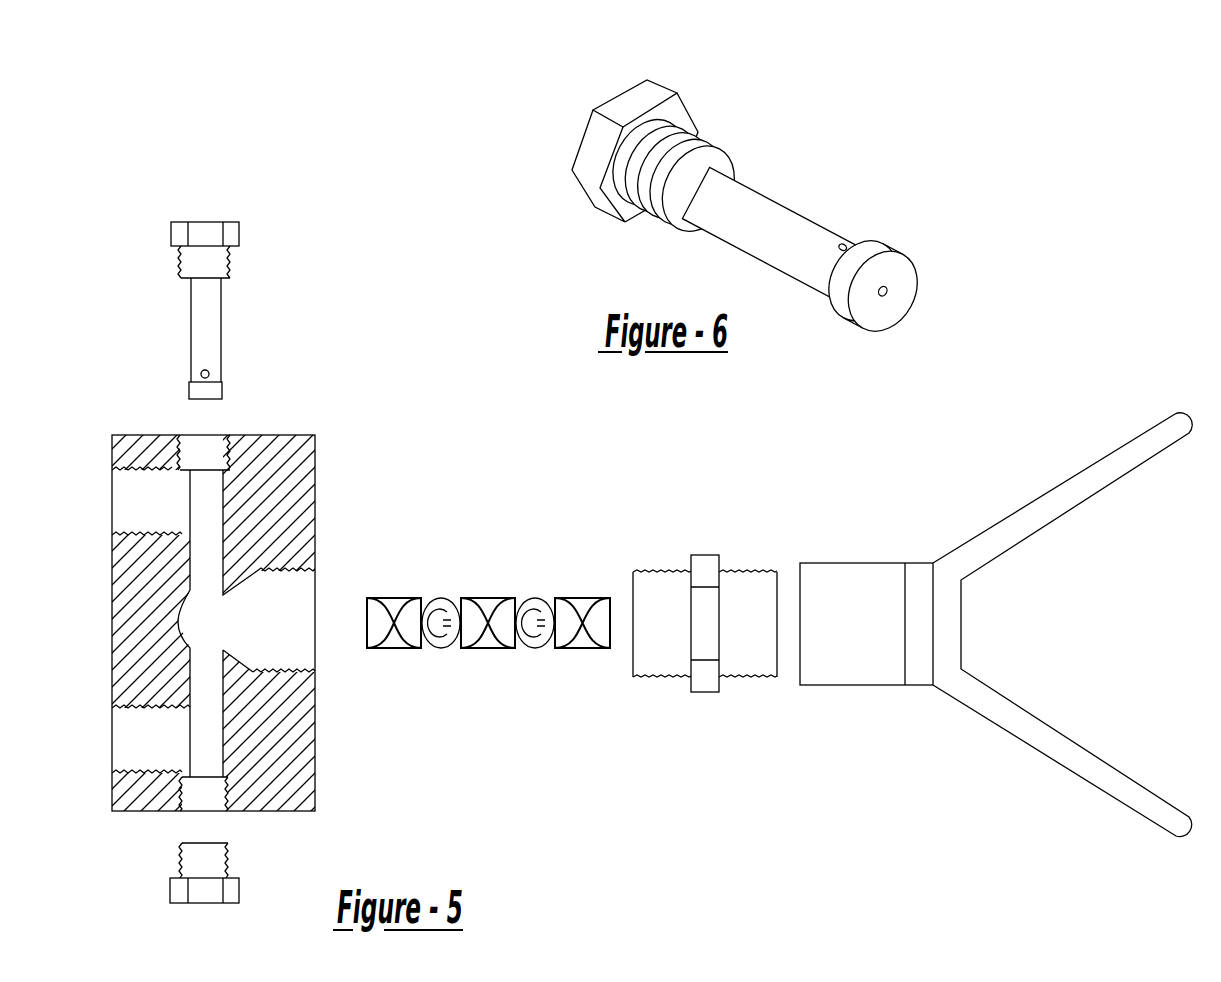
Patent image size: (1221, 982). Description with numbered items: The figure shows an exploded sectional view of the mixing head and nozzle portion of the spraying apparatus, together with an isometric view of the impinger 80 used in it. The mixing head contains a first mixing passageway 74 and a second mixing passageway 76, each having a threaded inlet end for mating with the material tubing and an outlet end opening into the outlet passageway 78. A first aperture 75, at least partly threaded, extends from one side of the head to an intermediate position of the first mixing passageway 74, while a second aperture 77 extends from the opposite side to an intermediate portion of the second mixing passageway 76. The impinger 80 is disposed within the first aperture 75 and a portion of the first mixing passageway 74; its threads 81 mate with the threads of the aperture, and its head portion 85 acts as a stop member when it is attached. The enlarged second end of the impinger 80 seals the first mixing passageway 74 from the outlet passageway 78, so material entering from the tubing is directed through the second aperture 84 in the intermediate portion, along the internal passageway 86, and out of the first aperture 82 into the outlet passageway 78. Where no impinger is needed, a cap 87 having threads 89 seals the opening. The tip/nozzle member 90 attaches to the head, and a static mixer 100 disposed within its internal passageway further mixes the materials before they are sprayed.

In FIG. 5, the first mixing passageway 74 is at (197, 487).
In FIG. 5, the first aperture 75 is at (215, 440).
In FIG. 5, the second mixing passageway 76 is at (131, 748).
In FIG. 5, the second aperture 77 is at (187, 812).
In FIG. 5, the outlet passageway 78 is at (235, 632).
In FIG. 5, the impinger 80 is at (227, 283).
In FIG. 6, the impinger 80 is at (758, 252).
In FIG. 5, the threads 81 is at (231, 260).
In FIG. 6, the threads 81 is at (660, 215).
In FIG. 6, the first aperture 82 is at (887, 292).
In FIG. 5, the second aperture 84 is at (199, 375).
In FIG. 6, the second aperture 84 is at (845, 243).
In FIG. 5, the head portion 85 is at (236, 222).
In FIG. 6, the head portion 85 is at (588, 140).
In FIG. 5, the internal passageway 86 is at (195, 312).
In FIG. 5, the cap 87 is at (205, 886).
In FIG. 5, the threads 89 is at (229, 847).
In FIG. 5, the tip/nozzle member 90 is at (786, 528).
In FIG. 5, the static mixer 100 is at (473, 648).